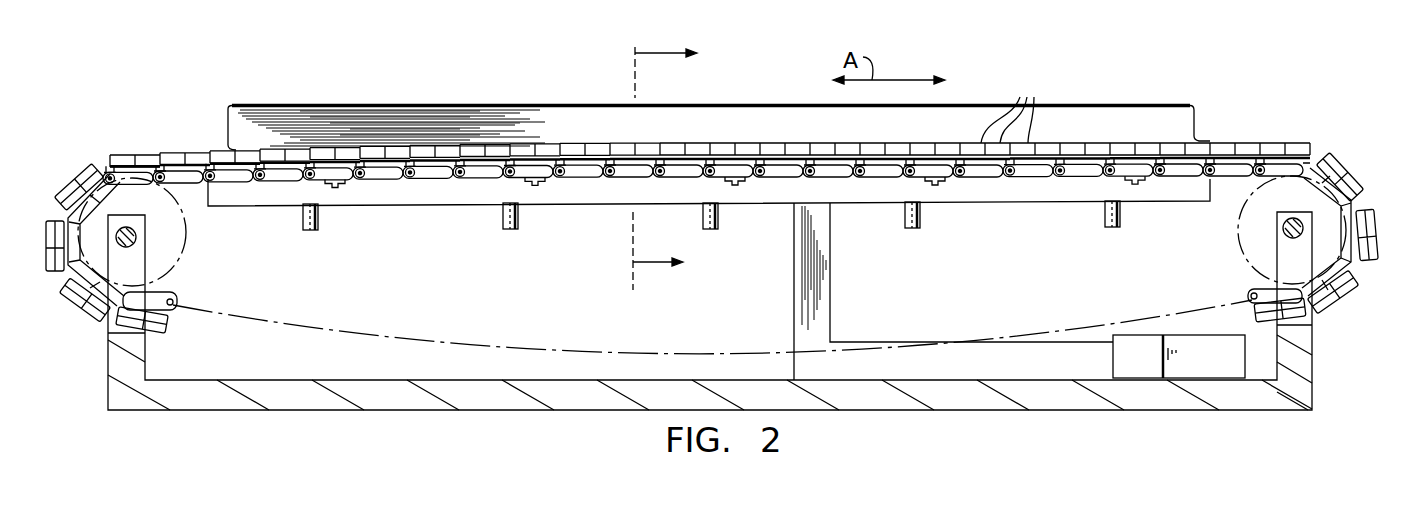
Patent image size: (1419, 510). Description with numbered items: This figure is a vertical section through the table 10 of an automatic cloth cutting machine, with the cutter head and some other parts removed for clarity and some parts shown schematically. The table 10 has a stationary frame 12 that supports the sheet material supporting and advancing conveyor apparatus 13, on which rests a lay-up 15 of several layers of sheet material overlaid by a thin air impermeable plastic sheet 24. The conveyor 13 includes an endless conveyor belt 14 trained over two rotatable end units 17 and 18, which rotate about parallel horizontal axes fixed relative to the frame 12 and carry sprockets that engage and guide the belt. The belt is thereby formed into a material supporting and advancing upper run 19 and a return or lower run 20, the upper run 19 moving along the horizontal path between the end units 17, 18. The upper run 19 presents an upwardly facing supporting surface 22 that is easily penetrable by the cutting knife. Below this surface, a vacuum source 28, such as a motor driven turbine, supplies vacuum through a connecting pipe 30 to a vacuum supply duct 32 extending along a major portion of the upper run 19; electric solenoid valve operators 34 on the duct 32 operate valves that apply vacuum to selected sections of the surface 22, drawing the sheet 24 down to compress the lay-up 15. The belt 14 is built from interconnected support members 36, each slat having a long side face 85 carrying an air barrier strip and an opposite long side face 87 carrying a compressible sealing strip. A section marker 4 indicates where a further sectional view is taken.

The table 10 is at (1091, 84).
The stationary frame 12 is at (1313, 362).
The sheet material supporting and advancing conveyor apparatus 13 is at (1231, 126).
The endless conveyor belt 14 is at (1296, 142).
The lay-up 15 is at (388, 112).
The end unit 17 is at (188, 225).
The end unit 18 is at (1246, 262).
The upper run 19 is at (177, 150).
The lower run 20 is at (642, 353).
The sheet material supporting surface 22 is at (1249, 142).
The sheet 24 is at (476, 108).
The vacuum source 28 is at (1198, 336).
The connecting pipe 30 is at (830, 308).
The vacuum supply duct 32 is at (1016, 190).
The electric solenoid valve operators 34 is at (318, 218).
The support members 36 is at (82, 168).
The long side face 85 is at (1370, 278).
The other long side face 87 is at (1350, 277).
The section line 4- 4 is at (653, 164).